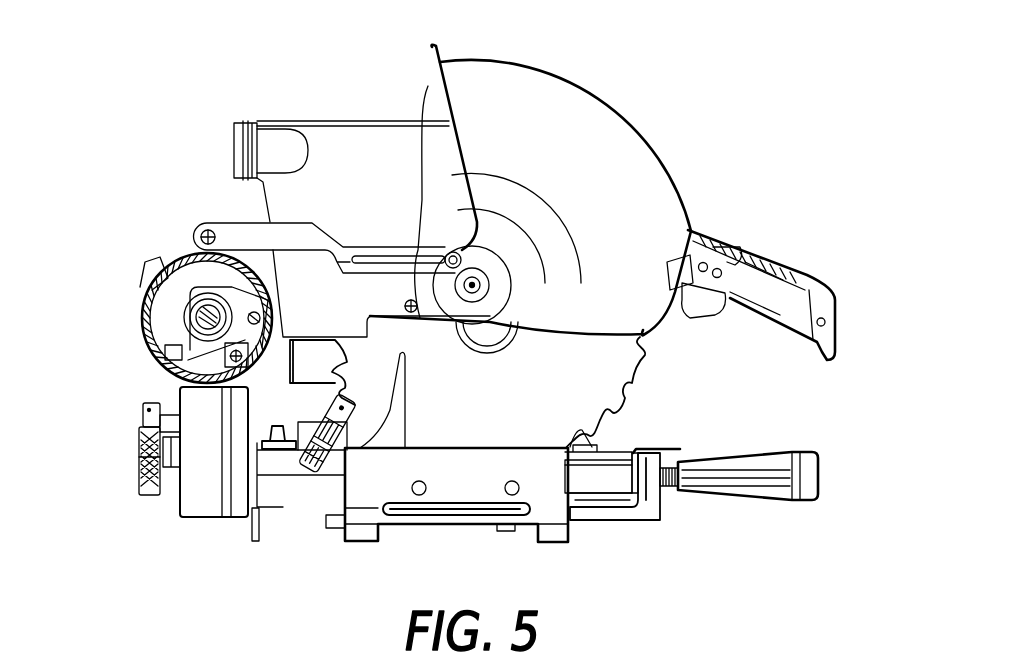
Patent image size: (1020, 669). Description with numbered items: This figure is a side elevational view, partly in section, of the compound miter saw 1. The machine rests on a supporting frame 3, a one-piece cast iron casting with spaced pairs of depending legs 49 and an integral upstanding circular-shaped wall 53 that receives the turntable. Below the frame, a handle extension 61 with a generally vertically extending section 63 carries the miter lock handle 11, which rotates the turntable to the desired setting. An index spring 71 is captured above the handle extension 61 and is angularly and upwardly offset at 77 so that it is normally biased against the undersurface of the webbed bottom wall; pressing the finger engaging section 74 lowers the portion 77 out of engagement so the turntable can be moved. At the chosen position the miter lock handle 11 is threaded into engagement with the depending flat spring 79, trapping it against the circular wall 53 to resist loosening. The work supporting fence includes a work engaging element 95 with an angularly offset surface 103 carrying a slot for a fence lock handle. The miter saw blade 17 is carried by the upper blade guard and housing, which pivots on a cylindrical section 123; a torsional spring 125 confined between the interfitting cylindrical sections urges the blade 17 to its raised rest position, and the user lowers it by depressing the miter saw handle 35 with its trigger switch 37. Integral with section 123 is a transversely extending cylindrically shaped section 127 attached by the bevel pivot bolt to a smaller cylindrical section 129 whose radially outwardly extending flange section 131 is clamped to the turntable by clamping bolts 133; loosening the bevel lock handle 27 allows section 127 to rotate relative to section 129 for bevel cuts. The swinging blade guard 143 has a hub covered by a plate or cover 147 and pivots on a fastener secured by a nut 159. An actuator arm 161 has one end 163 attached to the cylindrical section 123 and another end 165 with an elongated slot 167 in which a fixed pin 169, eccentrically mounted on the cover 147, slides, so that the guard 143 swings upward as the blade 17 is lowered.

The compound miter saw 1 is at (775, 129).
The supporting base or frame 3 is at (466, 472).
The miter lock handle 11 is at (762, 489).
The miter saw blade 17 is at (598, 375).
The bevel lock handle 27 is at (147, 462).
The miter saw handle 35 is at (795, 297).
The trigger switch 37 is at (752, 353).
The depending legs 49 is at (362, 535).
The upstanding circular-shaped wall 53 is at (614, 498).
The handle extension 61 is at (448, 518).
The generally vertically extending section 63 is at (653, 497).
The index spring 71 is at (418, 517).
The finger engaging section 74 is at (670, 443).
The angularly and upwardly offset engaging portion 77 is at (605, 489).
The depending flat spring 79 is at (638, 465).
The work engaging element 95 is at (408, 420).
The angularly offset surface 103 is at (372, 410).
The cylindrical section 123 is at (152, 345).
The torsional spring 125 is at (170, 360).
The transversely extending cylindrically shaped section 127 is at (198, 500).
The smaller complementary shaped cylindrical section 129 is at (245, 412).
The radially outwardly extending flange section 131 is at (277, 452).
The clamping bolts 133 is at (280, 424).
The swinging blade guard 143 is at (493, 267).
The plate or cover 147 is at (577, 177).
The nut 159 is at (481, 285).
The actuator arm 161 is at (293, 237).
The one end of actuator arm 163 is at (228, 237).
The other end of actuator arm 165 is at (592, 137).
The elongated slot 167 is at (428, 90).
The fixed pin 169 is at (468, 173).